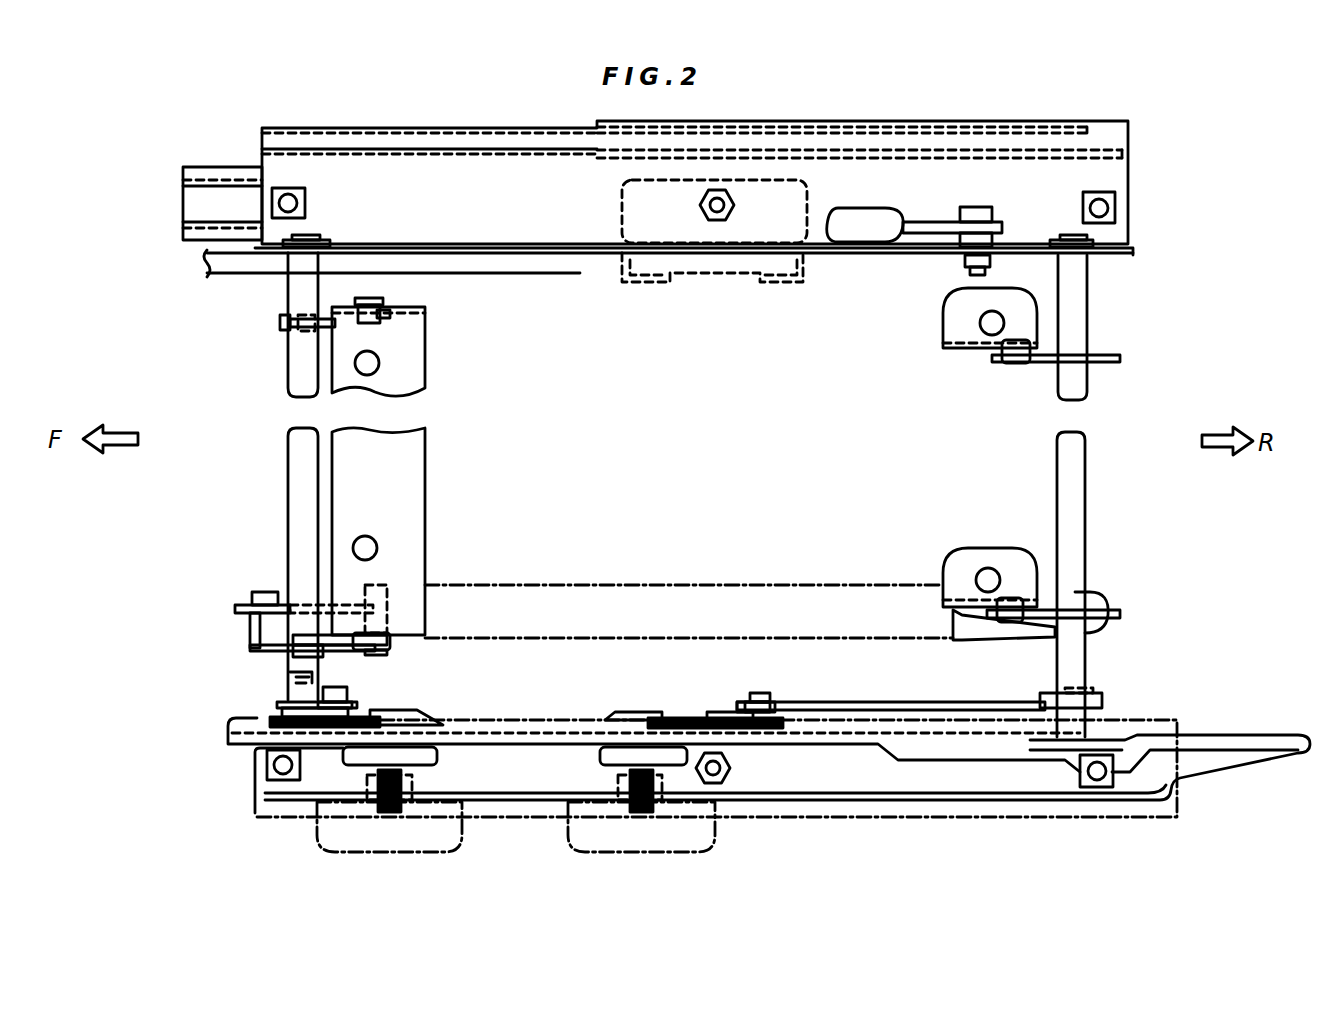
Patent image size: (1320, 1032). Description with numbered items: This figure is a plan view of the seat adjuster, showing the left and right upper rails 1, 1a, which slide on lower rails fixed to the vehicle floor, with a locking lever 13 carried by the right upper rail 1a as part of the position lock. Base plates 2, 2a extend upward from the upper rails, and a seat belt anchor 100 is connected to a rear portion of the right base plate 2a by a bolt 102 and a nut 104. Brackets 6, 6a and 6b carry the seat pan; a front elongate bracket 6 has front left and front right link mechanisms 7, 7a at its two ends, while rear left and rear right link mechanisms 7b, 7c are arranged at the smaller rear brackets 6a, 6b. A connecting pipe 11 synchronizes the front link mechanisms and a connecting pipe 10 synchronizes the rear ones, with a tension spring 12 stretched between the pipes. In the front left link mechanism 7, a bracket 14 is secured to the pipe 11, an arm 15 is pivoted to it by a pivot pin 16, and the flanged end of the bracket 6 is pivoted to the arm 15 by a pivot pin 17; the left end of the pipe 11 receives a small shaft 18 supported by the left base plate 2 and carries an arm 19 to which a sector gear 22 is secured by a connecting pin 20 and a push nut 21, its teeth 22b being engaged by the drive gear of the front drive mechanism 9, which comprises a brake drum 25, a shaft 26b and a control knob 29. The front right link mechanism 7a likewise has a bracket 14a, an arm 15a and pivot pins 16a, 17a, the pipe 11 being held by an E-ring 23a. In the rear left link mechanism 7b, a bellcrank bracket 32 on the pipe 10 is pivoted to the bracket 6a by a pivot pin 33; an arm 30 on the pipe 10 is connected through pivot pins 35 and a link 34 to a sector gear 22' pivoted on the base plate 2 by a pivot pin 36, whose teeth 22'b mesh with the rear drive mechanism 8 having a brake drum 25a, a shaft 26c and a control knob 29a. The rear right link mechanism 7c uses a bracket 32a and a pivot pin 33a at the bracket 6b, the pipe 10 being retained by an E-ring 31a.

The right upper rail 1a is at (205, 167).
The right base plate 2a is at (833, 262).
The locking lever 13 is at (575, 270).
The E-ring 23a is at (318, 238).
The front right link mechanism 7a is at (340, 283).
The pivot pin 17a is at (385, 301).
The bracket 14a is at (280, 322).
The pivot pin 16a is at (300, 332).
The arm 15a is at (390, 318).
The seat belt anchor 100 is at (890, 210).
The bolt 102 is at (982, 207).
The nut 104 is at (965, 262).
The E-ring 31a is at (1093, 243).
The rear right bracket 6b is at (945, 330).
The bracket 32a is at (1120, 358).
The pivot pin 33a is at (1005, 362).
The rear right link mechanism 7c is at (1023, 378).
The connecting pipe 11 is at (290, 465).
The front elongate bracket 6 is at (408, 478).
The tension spring 12 is at (715, 585).
The pivot pin 17 is at (375, 630).
The pivot pin 16 is at (300, 600).
The bracket 14 is at (258, 628).
The front left link mechanism 7 is at (335, 658).
The arm 15 is at (390, 643).
The small shaft 18 is at (288, 680).
The connecting pin 20 is at (345, 688).
The push nut 21 is at (350, 702).
The arm 19 is at (277, 704).
The sector gear 22 is at (279, 724).
The teeth 22b is at (400, 715).
The left base plate 2 is at (555, 720).
The left upper rail 1 is at (900, 810).
The brake drum 25 is at (440, 755).
The shaft 26b is at (388, 815).
The control knob 29 is at (342, 835).
The front drive mechanism 9 is at (412, 860).
The brake drum 25a is at (600, 755).
The shaft 26c is at (660, 815).
The control knob 29a is at (695, 840).
The rear drive mechanism 8 is at (633, 860).
The sector gear 22' is at (715, 692).
The teeth 22'b is at (621, 688).
The pivot pin 36 is at (730, 712).
The pivot pin 35 is at (760, 693).
The link 34 is at (925, 703).
The arm 30 is at (1102, 700).
The connecting pipe 10 is at (1078, 482).
The rear left bracket 6a is at (990, 560).
The pivot pin 33 is at (1000, 622).
The bracket 32 is at (1112, 612).
The rear left link mechanism 7b is at (1105, 582).